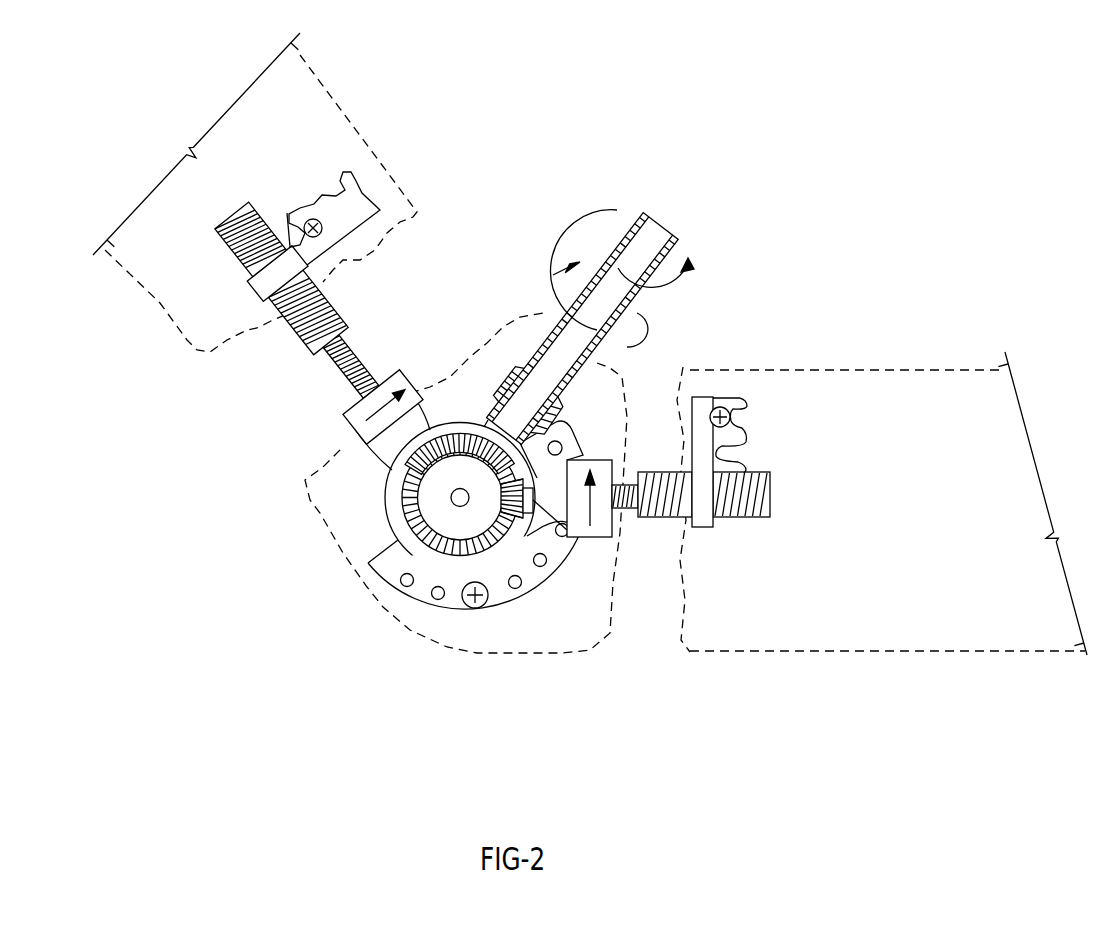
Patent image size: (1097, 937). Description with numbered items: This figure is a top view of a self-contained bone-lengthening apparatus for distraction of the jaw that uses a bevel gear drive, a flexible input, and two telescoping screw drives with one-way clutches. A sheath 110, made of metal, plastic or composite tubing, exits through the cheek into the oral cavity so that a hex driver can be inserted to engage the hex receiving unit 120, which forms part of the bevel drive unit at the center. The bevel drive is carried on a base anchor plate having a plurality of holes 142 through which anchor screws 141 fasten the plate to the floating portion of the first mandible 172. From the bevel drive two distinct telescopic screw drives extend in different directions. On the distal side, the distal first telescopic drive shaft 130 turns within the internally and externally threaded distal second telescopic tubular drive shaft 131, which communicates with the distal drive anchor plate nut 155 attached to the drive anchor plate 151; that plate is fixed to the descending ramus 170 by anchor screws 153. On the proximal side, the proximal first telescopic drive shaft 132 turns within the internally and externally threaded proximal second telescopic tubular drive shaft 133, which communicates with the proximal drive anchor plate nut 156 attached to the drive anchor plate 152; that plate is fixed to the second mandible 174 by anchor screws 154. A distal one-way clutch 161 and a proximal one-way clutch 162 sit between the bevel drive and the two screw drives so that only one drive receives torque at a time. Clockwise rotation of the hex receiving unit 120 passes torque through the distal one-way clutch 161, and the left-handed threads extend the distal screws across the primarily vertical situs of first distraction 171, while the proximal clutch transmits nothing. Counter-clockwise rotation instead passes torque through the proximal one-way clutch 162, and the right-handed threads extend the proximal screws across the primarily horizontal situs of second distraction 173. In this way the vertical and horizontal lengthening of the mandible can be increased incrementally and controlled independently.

The sheath 110 is at (683, 239).
The hex receiving unit 120 is at (562, 400).
The distal first telescopic drive shaft 130 is at (370, 360).
The distal second telescopic tubular drive shaft 131 is at (298, 337).
The proximal first telescopic drive shaft 132 is at (623, 505).
The proximal second telescopic tubular drive shaft 133 is at (762, 489).
The anchor screws 141 is at (470, 603).
The holes 142 is at (400, 581).
The drive anchor plate 151 is at (362, 193).
The drive anchor plate 152 is at (740, 402).
The anchor screws 153 is at (308, 221).
The anchor screws 154 is at (731, 420).
The distal drive anchor plate nut 155 is at (257, 283).
The proximal drive anchor plate nut 156 is at (823, 594).
The distal one-way clutch 161 is at (342, 430).
The proximal one-way clutch 162 is at (596, 525).
The descending ramus 170 is at (190, 310).
The situs of first distraction 171 is at (255, 393).
The first mandible 172 is at (352, 522).
The situs of second distraction 173 is at (648, 640).
The second mandible 174 is at (907, 630).